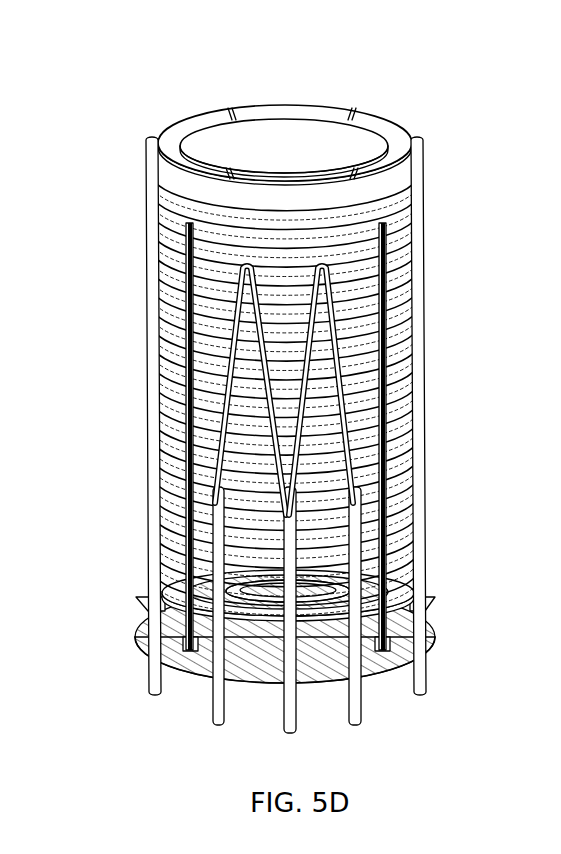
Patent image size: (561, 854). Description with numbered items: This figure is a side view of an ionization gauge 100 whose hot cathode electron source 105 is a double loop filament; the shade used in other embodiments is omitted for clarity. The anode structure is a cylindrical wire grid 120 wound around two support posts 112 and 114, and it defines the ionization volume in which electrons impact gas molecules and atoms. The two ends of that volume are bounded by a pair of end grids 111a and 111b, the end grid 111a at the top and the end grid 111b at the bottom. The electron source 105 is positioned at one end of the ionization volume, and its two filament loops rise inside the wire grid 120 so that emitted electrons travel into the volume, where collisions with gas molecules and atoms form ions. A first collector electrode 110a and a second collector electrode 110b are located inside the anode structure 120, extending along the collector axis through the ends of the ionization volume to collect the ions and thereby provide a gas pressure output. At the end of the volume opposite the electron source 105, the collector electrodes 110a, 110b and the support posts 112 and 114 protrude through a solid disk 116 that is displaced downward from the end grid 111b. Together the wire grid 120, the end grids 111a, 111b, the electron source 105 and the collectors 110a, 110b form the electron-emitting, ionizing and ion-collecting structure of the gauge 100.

The ionization gauge 100 is at (148, 98).
The hot cathode electron source 105 is at (205, 468).
The first collector electrode 110a is at (182, 282).
The second collector electrode 110b is at (385, 262).
The end grid 111a is at (382, 122).
The end grid 111b is at (163, 593).
The support post 112 is at (145, 140).
The support post 114 is at (425, 152).
The solid disk 116 is at (383, 667).
The cylindrical wire grid 120 is at (392, 193).